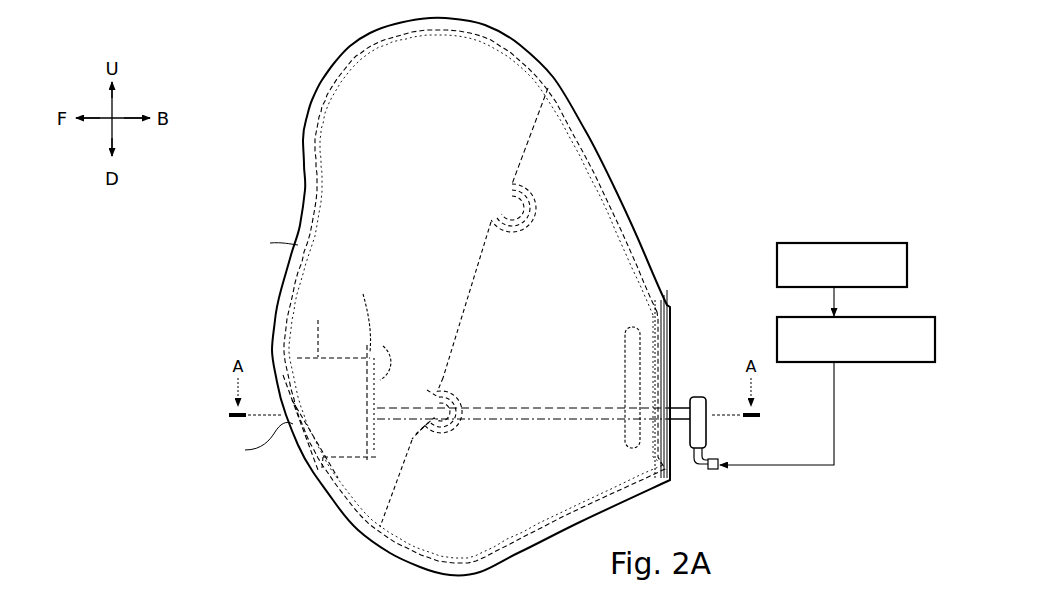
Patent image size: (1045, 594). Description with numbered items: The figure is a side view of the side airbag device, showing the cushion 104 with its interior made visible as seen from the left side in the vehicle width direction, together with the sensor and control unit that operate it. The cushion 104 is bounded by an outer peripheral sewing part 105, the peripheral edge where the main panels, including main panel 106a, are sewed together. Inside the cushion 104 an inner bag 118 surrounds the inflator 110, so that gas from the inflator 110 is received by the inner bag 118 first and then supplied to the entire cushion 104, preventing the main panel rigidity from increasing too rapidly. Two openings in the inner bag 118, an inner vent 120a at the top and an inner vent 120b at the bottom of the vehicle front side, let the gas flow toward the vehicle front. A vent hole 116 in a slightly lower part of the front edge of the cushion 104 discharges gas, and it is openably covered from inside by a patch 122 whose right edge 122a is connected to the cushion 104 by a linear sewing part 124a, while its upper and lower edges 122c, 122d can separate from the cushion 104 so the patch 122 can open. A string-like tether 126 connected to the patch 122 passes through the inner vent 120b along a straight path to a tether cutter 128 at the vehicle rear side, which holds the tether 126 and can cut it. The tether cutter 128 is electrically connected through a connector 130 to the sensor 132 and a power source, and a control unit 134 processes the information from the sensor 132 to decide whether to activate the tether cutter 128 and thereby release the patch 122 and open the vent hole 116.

The cushion 104 is at (287, 92).
The outer peripheral sewing part 105 is at (266, 244).
The main panel 106a is at (331, 141).
The inflator 110 is at (631, 327).
The vent hole 116 is at (250, 442).
The inner bag 118 is at (527, 137).
The inner vent 120a is at (500, 204).
The inner vent 120b is at (427, 390).
The patch 122 is at (279, 368).
The right edge of the patch 122a is at (400, 352).
The upper edge of the patch 122c is at (322, 326).
The lower edge of the patch 122d is at (325, 462).
The sewing part 124a is at (365, 312).
The tether 126 is at (499, 404).
The tether cutter 128 is at (700, 396).
The connector 130 is at (712, 472).
The sensor 132 is at (848, 243).
The control unit 134 is at (858, 364).